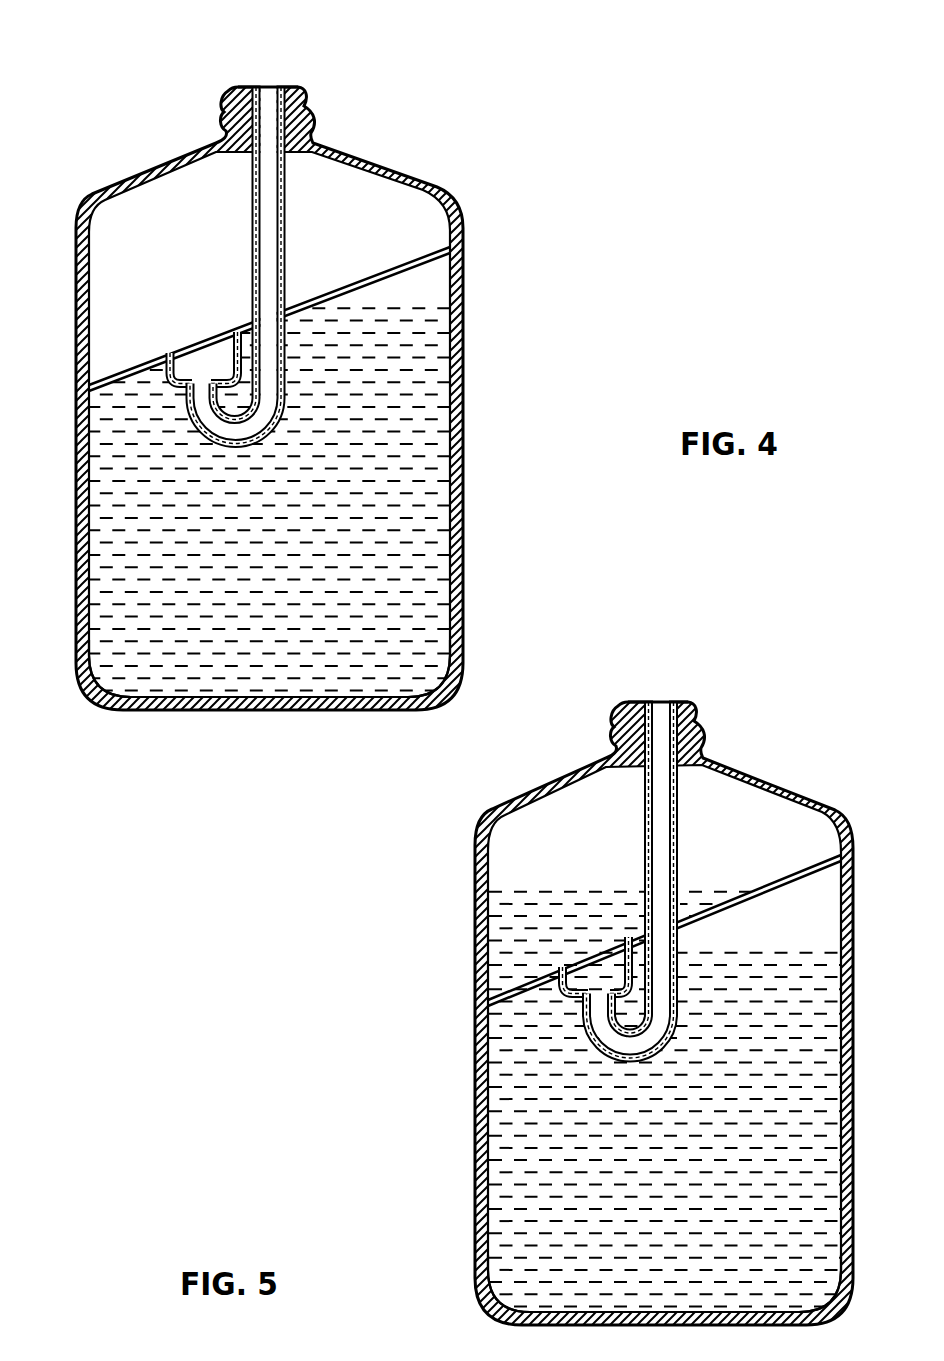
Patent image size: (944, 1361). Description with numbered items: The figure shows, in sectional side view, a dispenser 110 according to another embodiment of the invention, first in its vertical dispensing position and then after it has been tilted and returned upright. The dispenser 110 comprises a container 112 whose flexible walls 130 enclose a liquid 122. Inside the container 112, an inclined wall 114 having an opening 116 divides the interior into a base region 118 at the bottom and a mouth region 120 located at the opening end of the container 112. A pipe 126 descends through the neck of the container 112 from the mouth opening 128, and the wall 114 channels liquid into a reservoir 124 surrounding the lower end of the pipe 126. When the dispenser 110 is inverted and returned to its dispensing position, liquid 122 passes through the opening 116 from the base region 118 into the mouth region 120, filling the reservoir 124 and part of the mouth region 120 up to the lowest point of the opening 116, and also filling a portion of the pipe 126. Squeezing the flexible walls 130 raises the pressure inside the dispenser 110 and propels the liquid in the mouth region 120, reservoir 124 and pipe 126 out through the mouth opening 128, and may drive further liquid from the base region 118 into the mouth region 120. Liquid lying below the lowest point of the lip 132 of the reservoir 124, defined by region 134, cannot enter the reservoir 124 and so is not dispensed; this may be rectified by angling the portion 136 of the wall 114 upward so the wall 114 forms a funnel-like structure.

In FIG. 4, the dispenser 110 is at (470, 455).
In FIG. 5, the dispenser 110 is at (462, 1192).
In FIG. 4, the container 112 is at (462, 546).
In FIG. 5, the container 112 is at (856, 1049).
In FIG. 5, the wall 114 is at (758, 896).
In FIG. 4, the opening 116 is at (416, 277).
In FIG. 5, the opening 116 is at (784, 872).
In FIG. 4, the base region 118 is at (130, 669).
In FIG. 5, the base region 118 is at (525, 1279).
In FIG. 4, the mouth region 120 is at (374, 211).
In FIG. 5, the mouth region 120 is at (556, 844).
In FIG. 4, the liquid 122 is at (440, 592).
In FIG. 5, the liquid 122 is at (830, 1233).
In FIG. 4, the reservoir 124 is at (363, 278).
In FIG. 5, the reservoir 124 is at (596, 958).
In FIG. 4, the pipe 126 is at (287, 183).
In FIG. 5, the pipe 126 is at (643, 817).
In FIG. 4, the mouth opening 128 is at (262, 82).
In FIG. 5, the mouth opening 128 is at (660, 697).
In FIG. 4, the flexible walls 130 is at (462, 382).
In FIG. 5, the flexible walls 130 is at (856, 1151).
In FIG. 4, the lip 132 is at (170, 348).
In FIG. 5, the lip 132 is at (565, 967).
In FIG. 5, the region 134 is at (512, 977).
In FIG. 5, the portion of the wall 136 is at (523, 985).